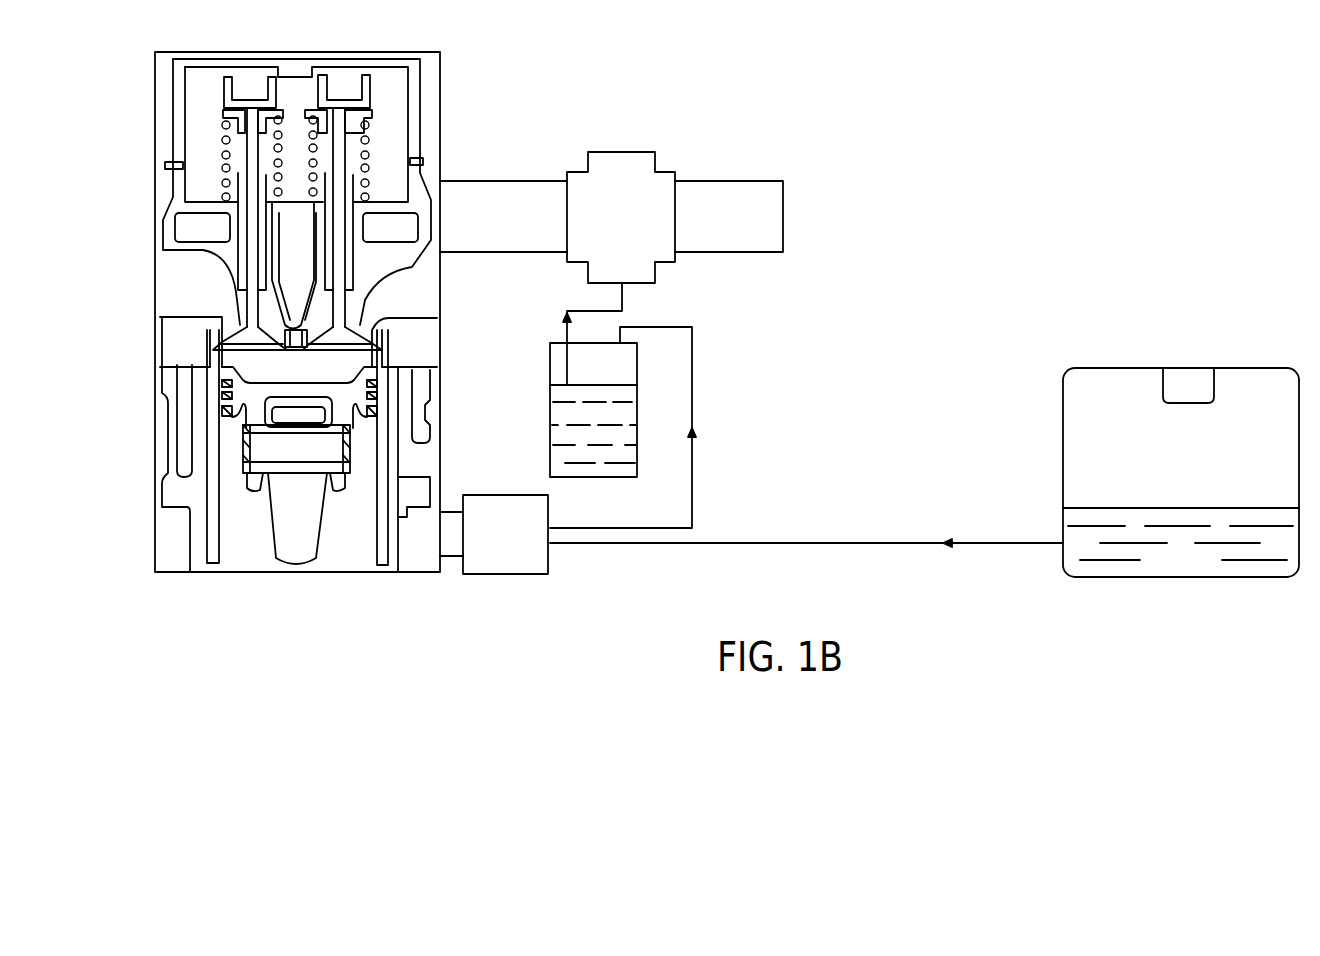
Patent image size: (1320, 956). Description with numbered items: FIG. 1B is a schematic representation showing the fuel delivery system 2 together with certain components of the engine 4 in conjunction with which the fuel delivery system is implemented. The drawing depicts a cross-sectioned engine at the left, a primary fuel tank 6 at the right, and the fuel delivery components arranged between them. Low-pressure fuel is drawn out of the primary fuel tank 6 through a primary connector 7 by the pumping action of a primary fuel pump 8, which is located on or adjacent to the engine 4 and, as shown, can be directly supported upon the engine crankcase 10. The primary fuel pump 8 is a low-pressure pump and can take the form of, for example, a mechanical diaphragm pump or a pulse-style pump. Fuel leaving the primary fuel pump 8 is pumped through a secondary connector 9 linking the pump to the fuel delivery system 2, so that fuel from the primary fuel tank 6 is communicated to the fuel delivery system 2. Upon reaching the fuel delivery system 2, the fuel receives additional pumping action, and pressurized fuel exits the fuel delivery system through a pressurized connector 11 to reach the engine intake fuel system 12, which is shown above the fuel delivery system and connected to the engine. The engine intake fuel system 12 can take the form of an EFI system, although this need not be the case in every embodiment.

The fuel delivery system 2 is at (547, 430).
The engine 4 is at (949, 192).
The primary fuel tank 6 is at (1193, 473).
The primary connector 7 is at (806, 544).
The primary fuel pump 8 is at (515, 549).
The secondary connector 9 is at (692, 373).
The engine crankcase 10 is at (155, 540).
The pressurized connector 11 is at (583, 306).
The engine intake fuel system 12 is at (630, 231).